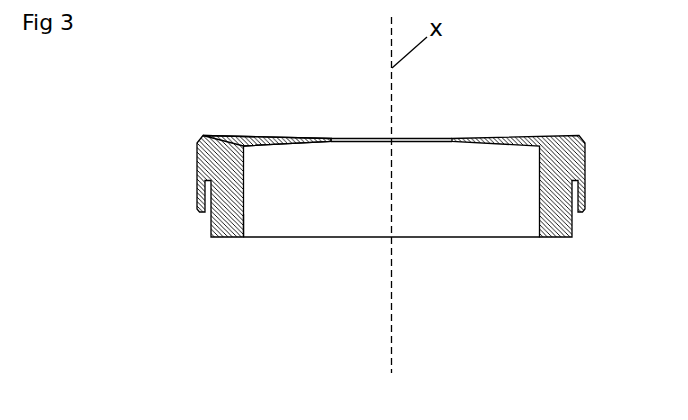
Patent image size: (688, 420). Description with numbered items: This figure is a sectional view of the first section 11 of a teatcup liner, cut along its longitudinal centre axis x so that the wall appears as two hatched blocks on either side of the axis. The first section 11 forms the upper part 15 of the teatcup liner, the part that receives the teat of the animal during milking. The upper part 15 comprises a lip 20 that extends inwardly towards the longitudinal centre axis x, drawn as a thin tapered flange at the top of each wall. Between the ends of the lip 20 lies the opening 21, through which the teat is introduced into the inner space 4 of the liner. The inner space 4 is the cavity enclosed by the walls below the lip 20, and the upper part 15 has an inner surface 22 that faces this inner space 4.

The inner space 4 is at (353, 200).
The first section 11 is at (208, 159).
The upper part 15 is at (565, 160).
The lip 20 is at (303, 138).
The opening 21 is at (432, 140).
The inner surface 22 is at (244, 214).